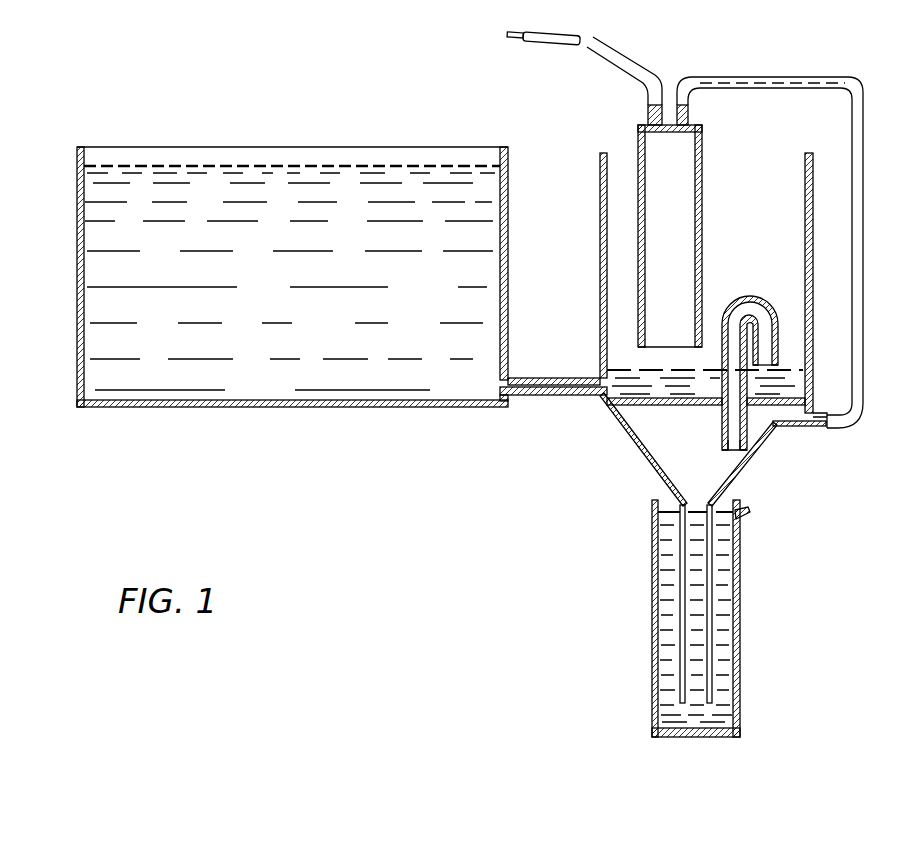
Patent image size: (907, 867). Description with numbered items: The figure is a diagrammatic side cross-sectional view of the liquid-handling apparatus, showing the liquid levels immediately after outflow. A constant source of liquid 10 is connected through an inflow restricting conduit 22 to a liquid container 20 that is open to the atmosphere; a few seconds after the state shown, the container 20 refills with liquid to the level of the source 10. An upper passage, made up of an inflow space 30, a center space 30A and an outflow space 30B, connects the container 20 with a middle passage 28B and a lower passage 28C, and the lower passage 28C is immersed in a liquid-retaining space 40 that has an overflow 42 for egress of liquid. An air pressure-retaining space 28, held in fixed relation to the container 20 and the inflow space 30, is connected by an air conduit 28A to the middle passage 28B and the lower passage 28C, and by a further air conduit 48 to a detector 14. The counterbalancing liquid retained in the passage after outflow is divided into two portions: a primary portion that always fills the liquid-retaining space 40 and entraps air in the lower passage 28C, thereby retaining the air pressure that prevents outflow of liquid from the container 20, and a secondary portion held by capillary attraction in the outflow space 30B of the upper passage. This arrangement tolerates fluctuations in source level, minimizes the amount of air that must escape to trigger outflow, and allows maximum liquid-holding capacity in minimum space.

The constant source of liquid 10 is at (509, 161).
The detector 14 is at (517, 39).
The liquid container 20 is at (813, 288).
The inflow restricting conduit 22 is at (552, 396).
The air pressure-retaining space 28 is at (685, 148).
The air conduit 28A is at (752, 83).
The middle passage 28B is at (665, 447).
The lower passage 28C is at (708, 548).
The inflow space 30 is at (780, 335).
The center space 30A is at (743, 383).
The outflow space 30B is at (747, 437).
The liquid-retaining space 40 is at (740, 612).
The overflow 42 is at (723, 506).
The air conduit 48 is at (626, 64).